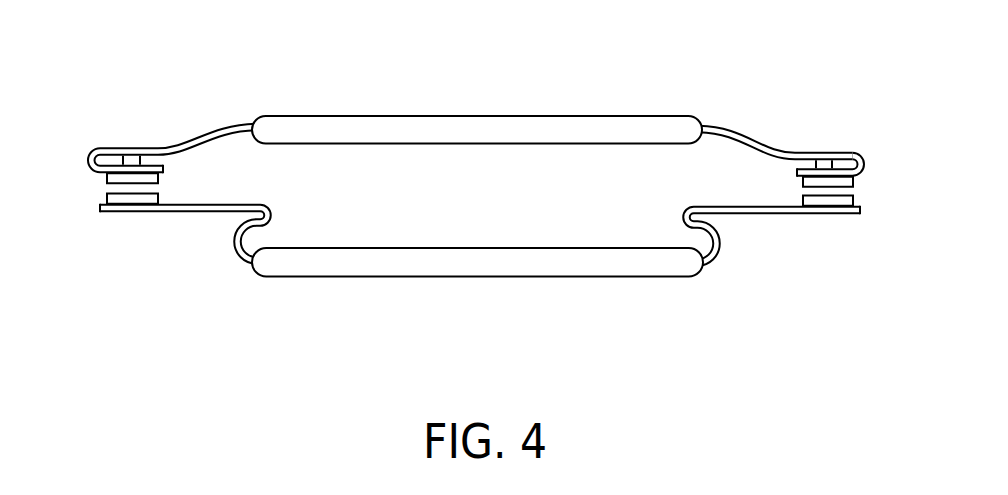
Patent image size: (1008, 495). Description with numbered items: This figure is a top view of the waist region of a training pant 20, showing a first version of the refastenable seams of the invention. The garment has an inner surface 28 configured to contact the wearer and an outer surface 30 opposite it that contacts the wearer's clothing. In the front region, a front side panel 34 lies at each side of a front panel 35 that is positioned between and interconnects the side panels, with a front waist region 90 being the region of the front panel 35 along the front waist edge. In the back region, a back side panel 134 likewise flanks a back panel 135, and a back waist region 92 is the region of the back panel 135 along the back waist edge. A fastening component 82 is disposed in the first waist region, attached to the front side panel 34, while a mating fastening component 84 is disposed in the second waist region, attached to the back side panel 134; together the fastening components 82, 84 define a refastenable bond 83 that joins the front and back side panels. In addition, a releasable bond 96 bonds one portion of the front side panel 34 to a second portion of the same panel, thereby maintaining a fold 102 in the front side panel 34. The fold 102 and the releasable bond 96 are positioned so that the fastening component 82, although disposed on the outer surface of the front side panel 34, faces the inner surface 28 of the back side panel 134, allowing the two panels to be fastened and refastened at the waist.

The training pant 20 is at (583, 102).
The inner surface 28 is at (405, 145).
The outer surface 30 is at (440, 115).
The front side panel 34 is at (197, 137).
The front panel 35 is at (652, 115).
The fastening component 82 is at (107, 186).
The refastenable bond 83 is at (158, 191).
The mating fastening component 84 is at (102, 199).
The front waist region 90 is at (340, 128).
The back waist region 92 is at (342, 262).
The releasable bond 96 is at (119, 158).
The fold 102 is at (88, 160).
The back side panel 134 is at (213, 213).
The back panel 135 is at (652, 267).